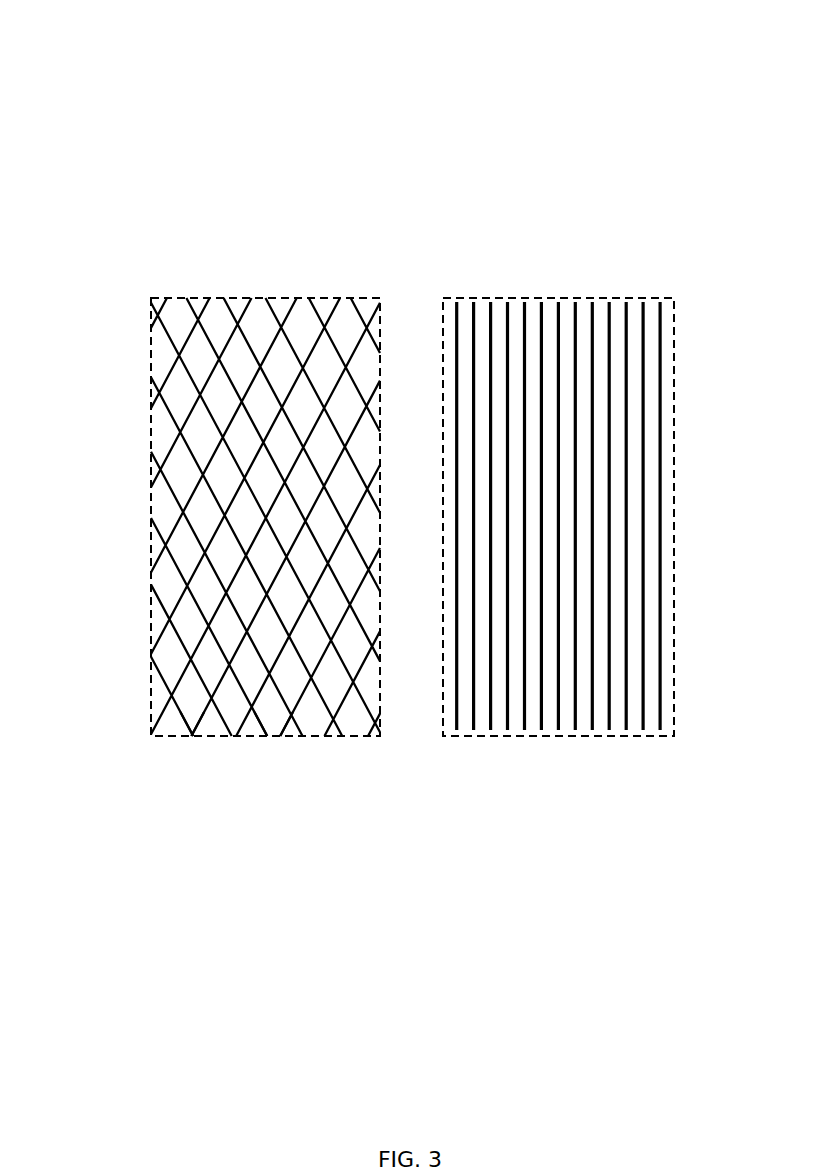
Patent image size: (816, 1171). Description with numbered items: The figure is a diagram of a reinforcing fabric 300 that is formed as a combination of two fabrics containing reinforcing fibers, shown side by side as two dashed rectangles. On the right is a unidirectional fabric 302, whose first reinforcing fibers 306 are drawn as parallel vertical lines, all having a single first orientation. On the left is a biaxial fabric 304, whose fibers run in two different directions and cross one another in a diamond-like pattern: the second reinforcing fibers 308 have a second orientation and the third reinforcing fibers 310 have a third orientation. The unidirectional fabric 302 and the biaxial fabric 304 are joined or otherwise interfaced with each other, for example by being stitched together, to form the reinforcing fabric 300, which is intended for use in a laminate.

The reinforcing fabric 300 is at (86, 58).
The unidirectional fabric 302 is at (564, 298).
The biaxial fabric 304 is at (270, 298).
The first reinforcing fibers 306 is at (470, 728).
The second reinforcing fibers 308 is at (167, 409).
The third reinforcing fibers 310 is at (200, 713).